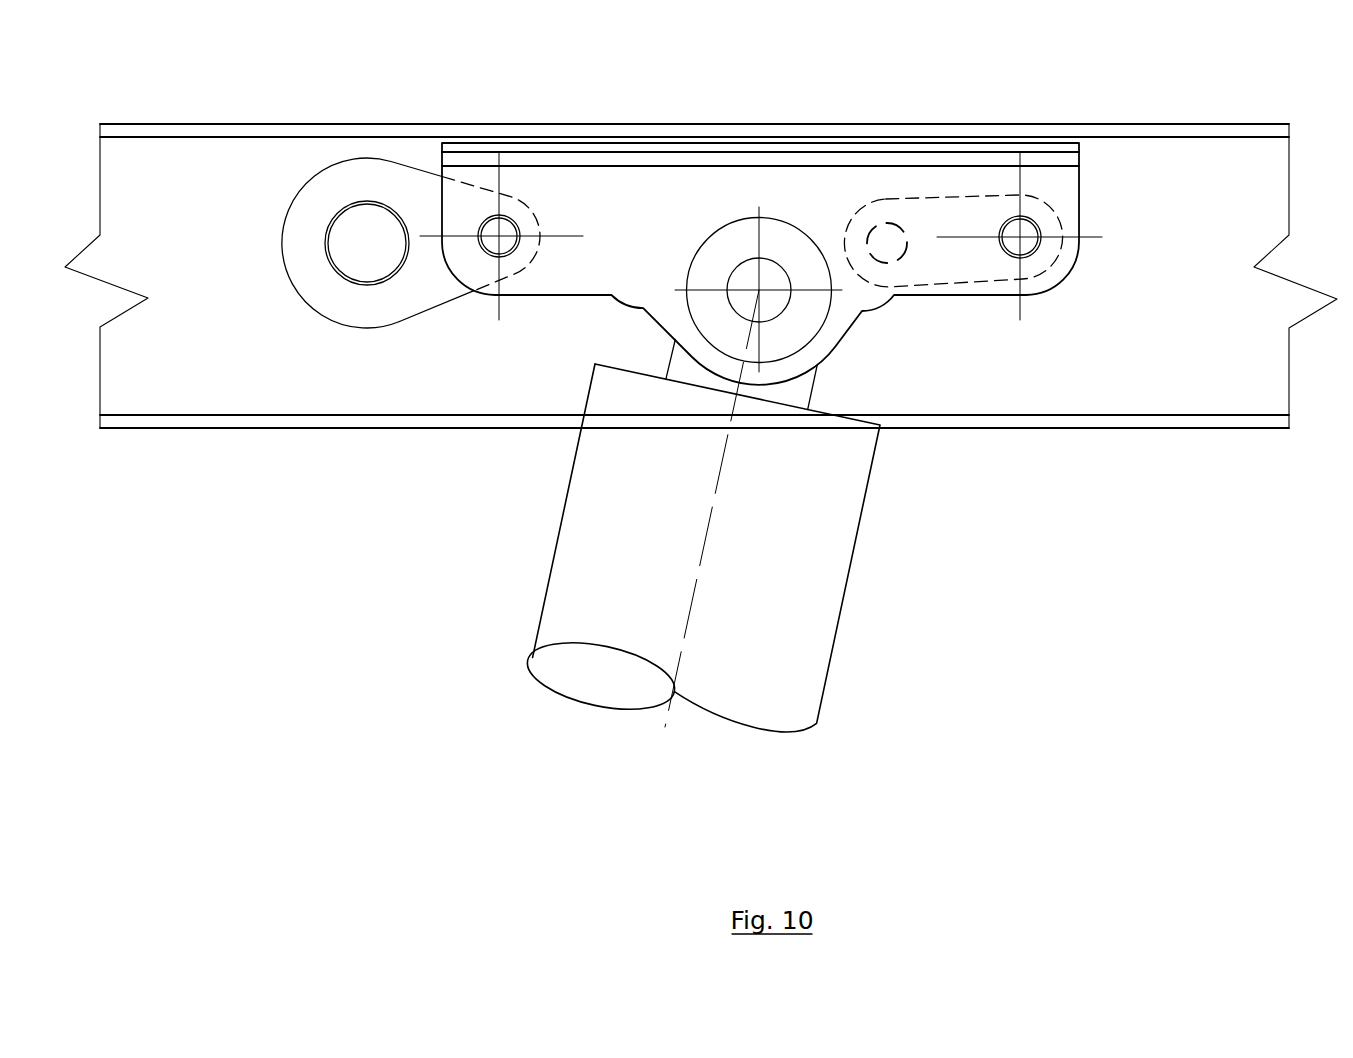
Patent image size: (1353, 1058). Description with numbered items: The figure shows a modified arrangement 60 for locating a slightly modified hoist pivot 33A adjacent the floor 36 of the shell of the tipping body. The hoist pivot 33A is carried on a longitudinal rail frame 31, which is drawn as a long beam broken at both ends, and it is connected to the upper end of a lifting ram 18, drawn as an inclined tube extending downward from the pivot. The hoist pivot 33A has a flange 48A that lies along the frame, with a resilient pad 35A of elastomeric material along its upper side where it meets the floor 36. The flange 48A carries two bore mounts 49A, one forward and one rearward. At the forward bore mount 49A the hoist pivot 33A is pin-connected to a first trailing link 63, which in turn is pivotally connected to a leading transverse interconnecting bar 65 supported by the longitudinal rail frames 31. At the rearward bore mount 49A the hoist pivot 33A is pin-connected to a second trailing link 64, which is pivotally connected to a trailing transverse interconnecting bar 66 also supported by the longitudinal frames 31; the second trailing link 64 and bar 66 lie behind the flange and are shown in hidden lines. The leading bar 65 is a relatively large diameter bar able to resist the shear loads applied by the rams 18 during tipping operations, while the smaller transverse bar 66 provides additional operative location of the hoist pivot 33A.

The lifting ram 18 is at (722, 580).
The rail frame 31 is at (137, 178).
The hoist pivot 33A is at (785, 185).
The resilient pad 35A is at (1057, 158).
The floor 36 is at (1012, 130).
The flange 48A is at (620, 198).
The bore mount 49A is at (517, 217).
The modified arrangement 60 is at (925, 105).
The first trailing link 63 is at (418, 295).
The second trailing link 64 is at (967, 260).
The leading transverse interconnecting bar 65 is at (365, 250).
The trailing transverse interconnecting bar 66 is at (887, 247).